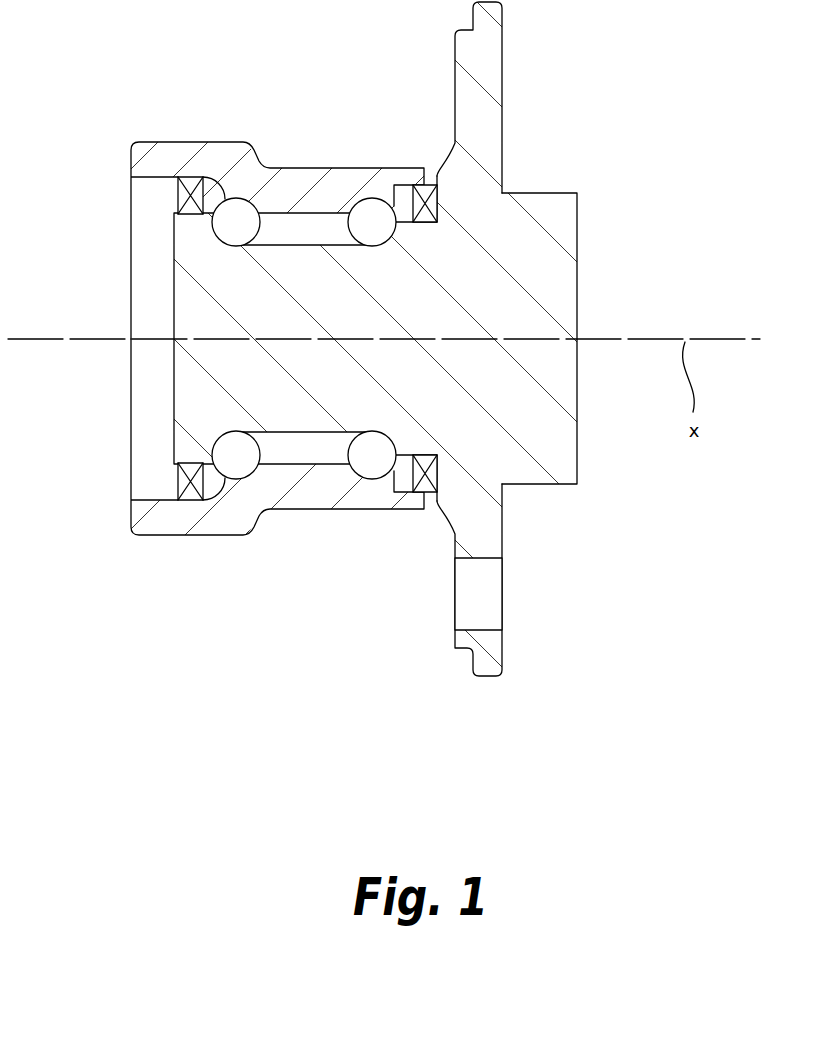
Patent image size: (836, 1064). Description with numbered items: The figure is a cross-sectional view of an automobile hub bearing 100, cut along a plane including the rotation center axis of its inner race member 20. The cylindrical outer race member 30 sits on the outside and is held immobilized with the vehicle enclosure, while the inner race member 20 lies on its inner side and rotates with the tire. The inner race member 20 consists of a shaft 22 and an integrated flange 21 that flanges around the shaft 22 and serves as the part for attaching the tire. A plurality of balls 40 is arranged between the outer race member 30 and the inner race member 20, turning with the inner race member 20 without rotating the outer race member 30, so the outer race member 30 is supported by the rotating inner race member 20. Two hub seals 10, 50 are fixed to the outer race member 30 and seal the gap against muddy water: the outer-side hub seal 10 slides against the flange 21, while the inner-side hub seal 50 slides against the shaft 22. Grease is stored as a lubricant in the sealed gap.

The hub bearing 100 is at (640, 77).
The hub seal 10 is at (428, 205).
The inner race member 20 is at (418, 532).
The flange 21 is at (487, 50).
The shaft 22 is at (270, 325).
The outer race member 30 is at (157, 123).
The balls 40 is at (240, 218).
The hub seal 50 is at (190, 195).